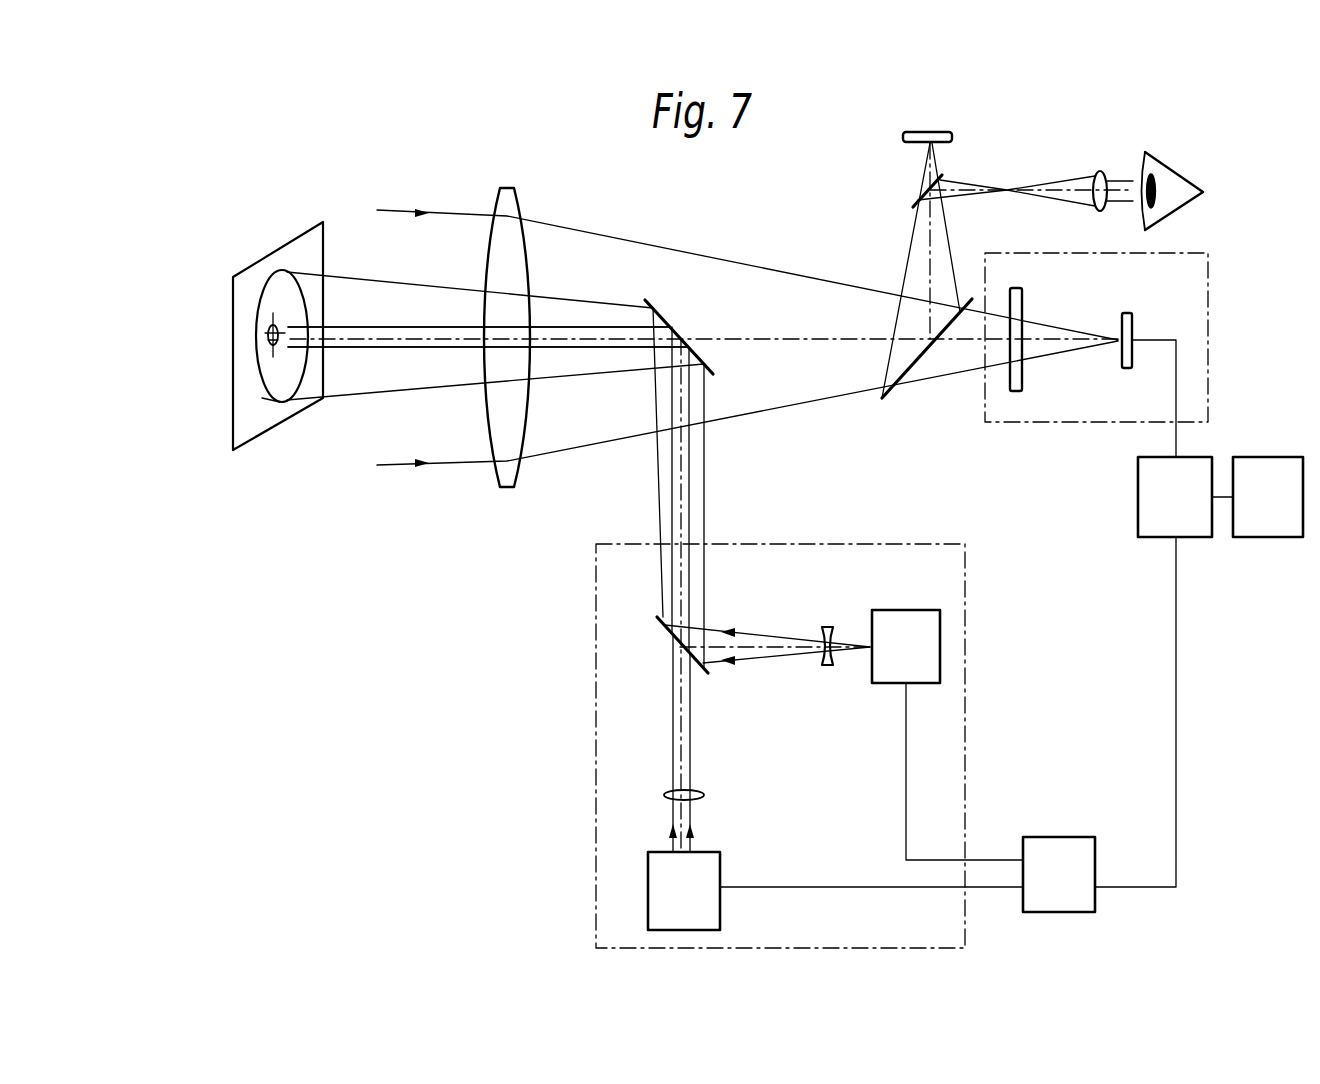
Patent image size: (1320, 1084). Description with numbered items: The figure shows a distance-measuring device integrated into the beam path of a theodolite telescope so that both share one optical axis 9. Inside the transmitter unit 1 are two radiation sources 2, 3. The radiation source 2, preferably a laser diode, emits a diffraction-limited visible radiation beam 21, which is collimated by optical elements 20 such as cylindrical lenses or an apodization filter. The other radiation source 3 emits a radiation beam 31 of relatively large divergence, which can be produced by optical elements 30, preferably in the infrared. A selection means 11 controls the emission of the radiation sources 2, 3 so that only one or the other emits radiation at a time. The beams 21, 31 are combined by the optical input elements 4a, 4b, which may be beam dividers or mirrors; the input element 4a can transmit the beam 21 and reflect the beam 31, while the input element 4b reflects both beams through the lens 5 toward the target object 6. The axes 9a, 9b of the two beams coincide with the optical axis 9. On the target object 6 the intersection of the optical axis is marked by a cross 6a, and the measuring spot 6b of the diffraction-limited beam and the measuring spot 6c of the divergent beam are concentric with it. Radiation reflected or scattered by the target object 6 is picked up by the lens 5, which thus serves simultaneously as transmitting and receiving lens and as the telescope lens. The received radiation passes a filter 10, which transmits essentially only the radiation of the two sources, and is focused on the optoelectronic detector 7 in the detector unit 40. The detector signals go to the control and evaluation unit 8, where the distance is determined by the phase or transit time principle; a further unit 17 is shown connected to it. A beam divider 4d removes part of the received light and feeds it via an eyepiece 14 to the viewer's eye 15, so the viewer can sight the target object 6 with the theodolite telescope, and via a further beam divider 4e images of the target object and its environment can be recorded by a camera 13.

The transmitter unit 1 is at (596, 615).
The radiation source 2 is at (694, 907).
The radiation source 3 is at (919, 667).
The optical input element 4a is at (665, 632).
The optical input element 4b is at (702, 355).
The beam divider 4d is at (915, 357).
The further beam divider 4e is at (920, 193).
The lens 5 is at (500, 213).
The target object 6 is at (293, 246).
The cross 6a is at (270, 323).
The measuring spot 6b is at (272, 335).
The measuring spot 6c is at (268, 397).
The optoelectronic detector 7 is at (1132, 350).
The control and evaluation unit 8 is at (1188, 516).
The optical axis 9 is at (793, 338).
The axis of radiation beam 9a is at (388, 340).
The axis of radiation beam 9b is at (488, 337).
The filter 10 is at (1022, 373).
The selection means 11 is at (1069, 895).
The camera 13 is at (953, 137).
The eyepiece 14 is at (1095, 172).
The viewer's eye 15 is at (1185, 170).
The display unit 17 is at (1281, 516).
The optical elements 20 is at (695, 797).
The radiation beam 21 is at (690, 740).
The optical elements 30 is at (826, 667).
The radiation beam 31 is at (762, 637).
The detector unit 40 is at (1208, 310).